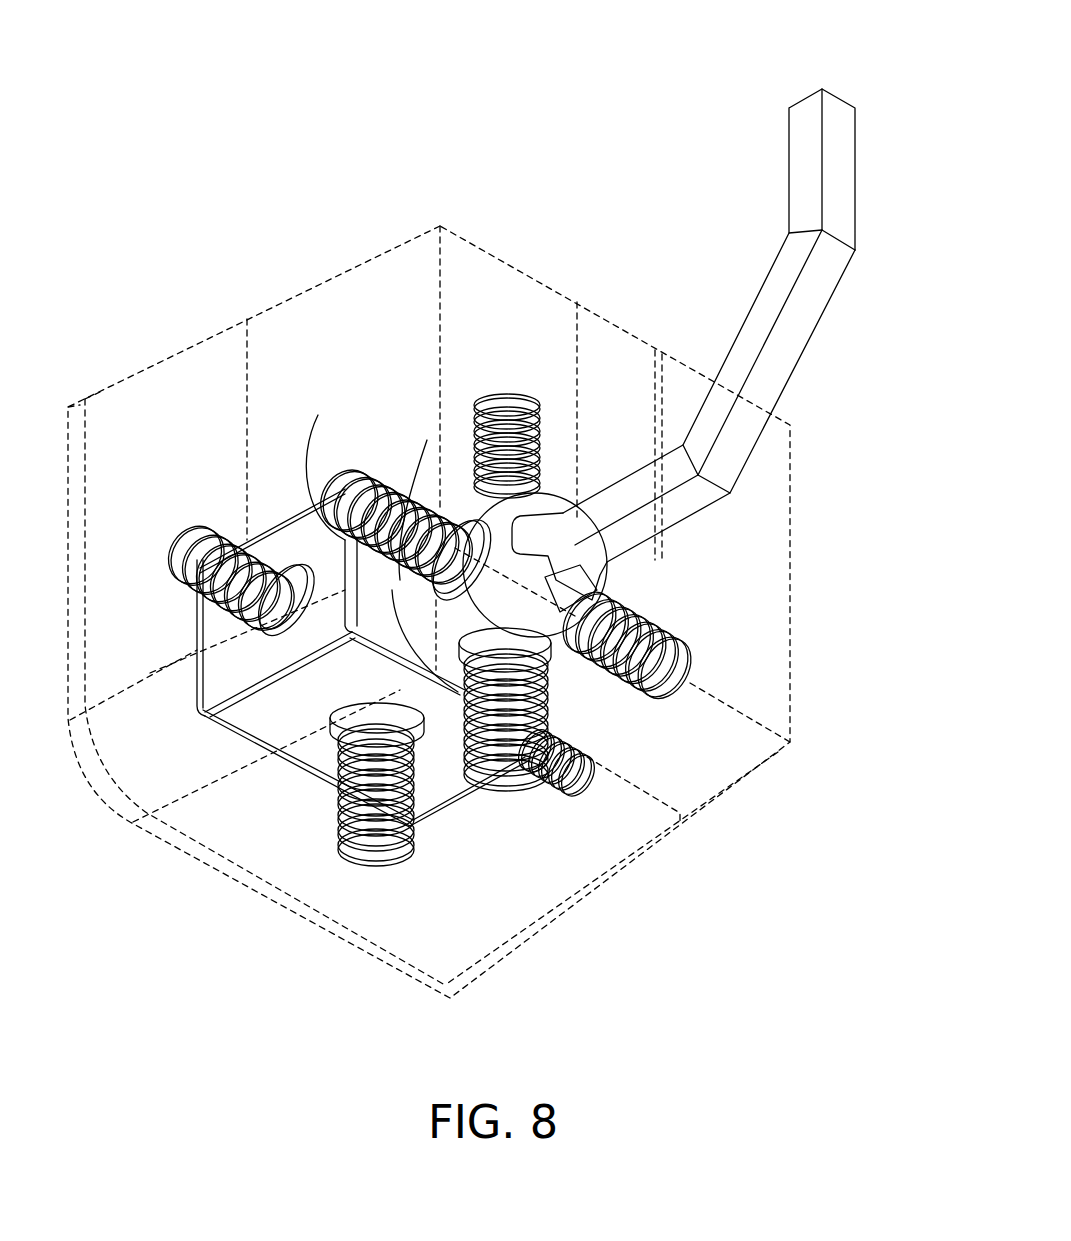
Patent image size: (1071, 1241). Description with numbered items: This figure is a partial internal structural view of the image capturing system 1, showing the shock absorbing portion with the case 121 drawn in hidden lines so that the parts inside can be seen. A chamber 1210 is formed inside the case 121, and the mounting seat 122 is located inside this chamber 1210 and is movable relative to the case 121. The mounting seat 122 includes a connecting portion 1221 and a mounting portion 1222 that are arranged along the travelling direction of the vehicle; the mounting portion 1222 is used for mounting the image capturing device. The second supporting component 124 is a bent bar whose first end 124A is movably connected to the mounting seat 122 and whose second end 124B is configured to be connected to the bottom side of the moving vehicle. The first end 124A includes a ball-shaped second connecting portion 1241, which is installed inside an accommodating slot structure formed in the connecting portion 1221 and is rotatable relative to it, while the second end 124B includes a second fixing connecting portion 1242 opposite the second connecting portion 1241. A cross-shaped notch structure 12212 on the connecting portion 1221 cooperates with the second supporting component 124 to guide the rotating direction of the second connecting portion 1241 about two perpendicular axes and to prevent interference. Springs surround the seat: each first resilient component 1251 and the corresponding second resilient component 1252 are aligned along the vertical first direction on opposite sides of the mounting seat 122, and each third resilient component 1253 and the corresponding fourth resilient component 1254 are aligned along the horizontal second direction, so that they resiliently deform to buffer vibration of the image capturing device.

The image capturing system 1 is at (280, 64).
The case 121 is at (85, 785).
The mounting seat 122 is at (265, 770).
The second supporting component 124 is at (795, 337).
The first end of the second supporting component 124A is at (553, 485).
The second end of the second supporting component 124B is at (783, 130).
The chamber 1210 is at (593, 413).
The connecting portion 1221 is at (473, 493).
The mounting portion 1222 is at (307, 757).
The second connecting portion 1241 is at (607, 547).
The second fixing connecting portion 1242 is at (843, 167).
The first resilient component 1251 is at (505, 398).
The second resilient component 1252 is at (378, 865).
The third resilient component 1253 is at (175, 505).
The fourth resilient component 1254 is at (677, 657).
The notch structure 12212 is at (587, 600).